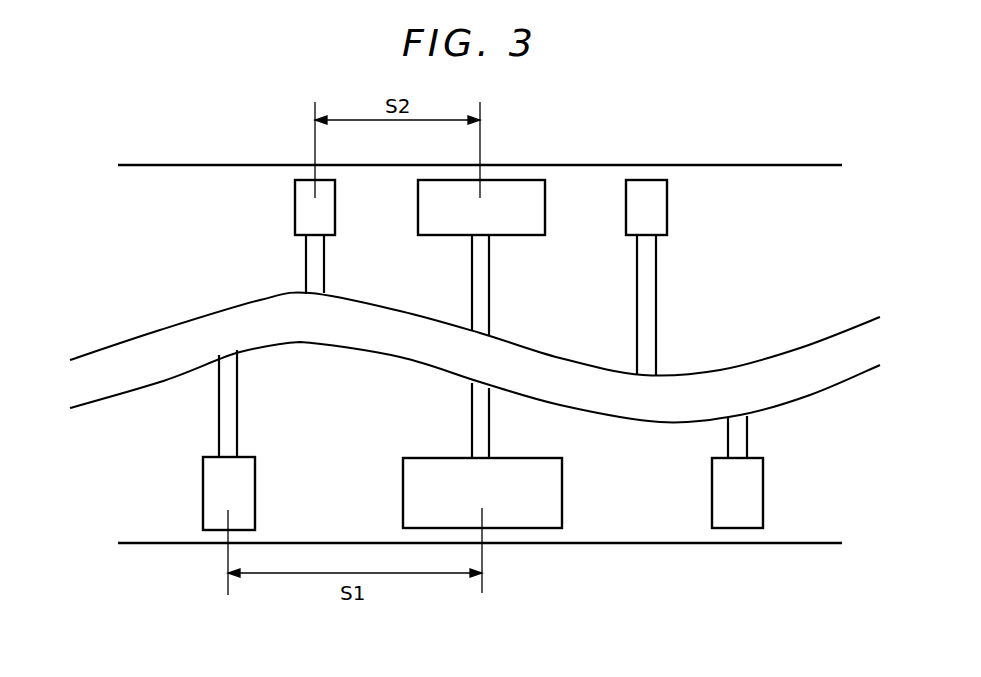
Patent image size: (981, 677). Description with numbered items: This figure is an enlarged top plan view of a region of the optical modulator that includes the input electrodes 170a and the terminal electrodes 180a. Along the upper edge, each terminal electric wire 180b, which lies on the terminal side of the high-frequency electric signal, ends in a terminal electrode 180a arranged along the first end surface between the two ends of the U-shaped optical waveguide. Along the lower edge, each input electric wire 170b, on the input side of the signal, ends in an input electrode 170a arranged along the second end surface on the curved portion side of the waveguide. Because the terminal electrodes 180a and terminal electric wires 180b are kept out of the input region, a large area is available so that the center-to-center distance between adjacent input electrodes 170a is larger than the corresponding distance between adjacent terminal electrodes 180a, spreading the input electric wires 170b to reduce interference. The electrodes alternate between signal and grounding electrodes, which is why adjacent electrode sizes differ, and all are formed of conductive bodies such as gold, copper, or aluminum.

The terminal electrode 180a is at (300, 199).
The terminal electric wire 180b is at (312, 268).
The input electrode 170a is at (208, 500).
The input electric wire 170b is at (226, 385).